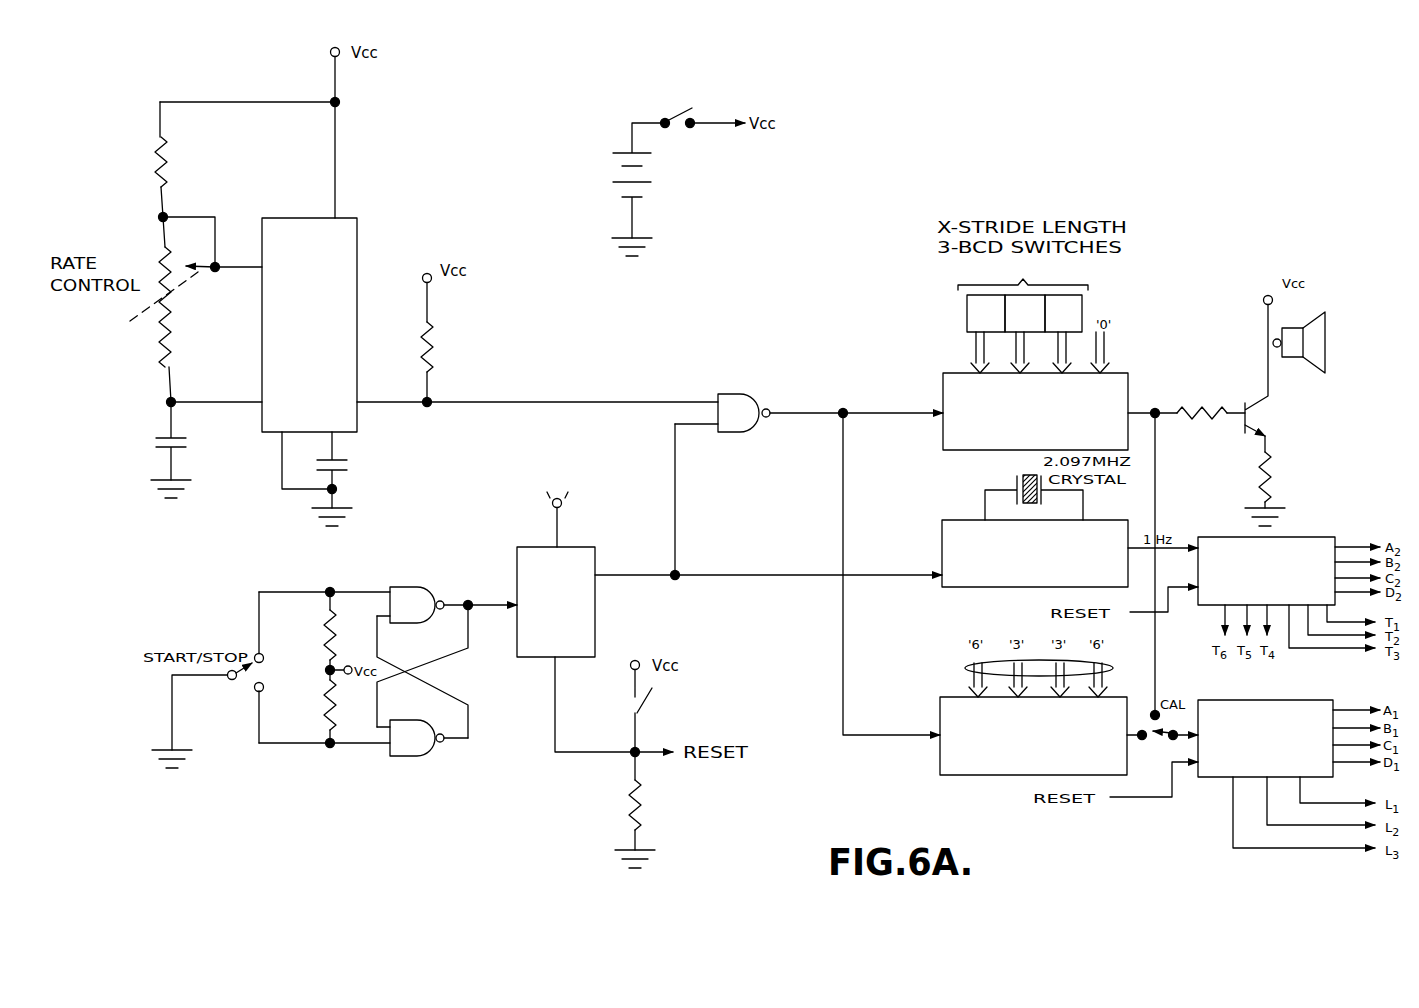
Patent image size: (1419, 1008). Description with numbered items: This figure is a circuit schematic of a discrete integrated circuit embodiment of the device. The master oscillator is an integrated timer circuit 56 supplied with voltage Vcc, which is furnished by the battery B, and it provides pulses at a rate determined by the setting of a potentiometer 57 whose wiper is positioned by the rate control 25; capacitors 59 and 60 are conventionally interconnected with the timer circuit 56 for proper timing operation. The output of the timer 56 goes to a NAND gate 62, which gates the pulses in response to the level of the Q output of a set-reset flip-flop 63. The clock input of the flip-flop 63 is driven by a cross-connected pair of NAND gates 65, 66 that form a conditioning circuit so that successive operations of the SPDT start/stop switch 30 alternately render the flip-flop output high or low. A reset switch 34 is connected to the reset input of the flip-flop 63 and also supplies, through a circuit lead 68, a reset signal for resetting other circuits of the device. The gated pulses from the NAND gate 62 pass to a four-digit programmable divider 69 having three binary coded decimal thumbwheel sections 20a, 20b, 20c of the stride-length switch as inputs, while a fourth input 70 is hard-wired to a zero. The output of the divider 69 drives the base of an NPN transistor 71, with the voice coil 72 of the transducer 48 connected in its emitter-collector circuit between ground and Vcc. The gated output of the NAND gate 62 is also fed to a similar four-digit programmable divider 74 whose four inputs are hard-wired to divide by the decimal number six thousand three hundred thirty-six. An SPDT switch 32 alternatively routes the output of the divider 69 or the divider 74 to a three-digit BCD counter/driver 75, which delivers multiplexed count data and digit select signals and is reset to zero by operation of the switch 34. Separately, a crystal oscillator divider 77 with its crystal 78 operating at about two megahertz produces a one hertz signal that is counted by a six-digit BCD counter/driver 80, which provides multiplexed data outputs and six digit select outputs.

The integrated timer circuit 56 is at (360, 240).
The potentiometer 57 is at (166, 262).
The control 25 is at (150, 300).
The capacitor 59 is at (158, 440).
The capacitor 60 is at (348, 466).
The start/stop switch 30 is at (675, 117).
The battery B is at (645, 155).
The NAND gate 62 is at (726, 394).
The set-reset flip-flop 63 is at (518, 562).
The NAND gate 65 is at (405, 587).
The NAND gate 66 is at (433, 756).
The reset switch 34 is at (635, 704).
The circuit lead 68 is at (643, 757).
The BCD section 20a is at (1083, 311).
The BCD section 20b is at (1028, 284).
The BCD section 20c is at (966, 310).
The fourth input 70 is at (1110, 361).
The four-digit programmable divider 69 is at (940, 387).
The crystal oscillator divider 77 is at (963, 518).
The crystal 78 is at (1014, 483).
The NPN transistor 71 is at (1245, 400).
The voice coil 72 is at (1274, 343).
The transducer 48 is at (1325, 345).
The six-digit BCD counter/driver circuit 80 is at (1296, 537).
The three-digit counter/driver circuit 75 is at (1244, 700).
The four-digit programmable divider circuit 74 is at (940, 755).
The switch 32 is at (1166, 742).